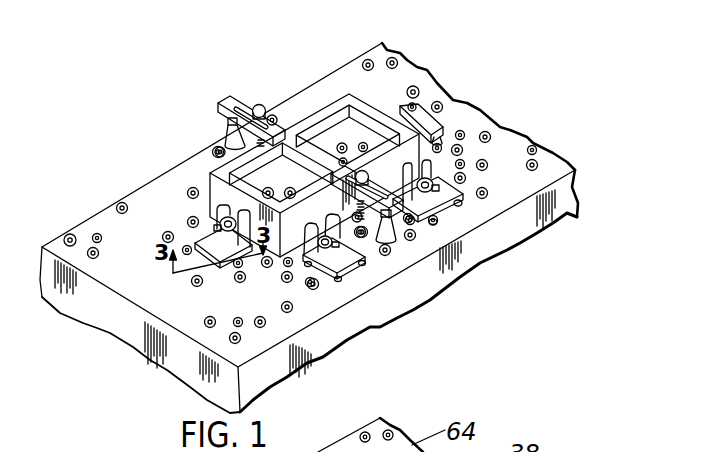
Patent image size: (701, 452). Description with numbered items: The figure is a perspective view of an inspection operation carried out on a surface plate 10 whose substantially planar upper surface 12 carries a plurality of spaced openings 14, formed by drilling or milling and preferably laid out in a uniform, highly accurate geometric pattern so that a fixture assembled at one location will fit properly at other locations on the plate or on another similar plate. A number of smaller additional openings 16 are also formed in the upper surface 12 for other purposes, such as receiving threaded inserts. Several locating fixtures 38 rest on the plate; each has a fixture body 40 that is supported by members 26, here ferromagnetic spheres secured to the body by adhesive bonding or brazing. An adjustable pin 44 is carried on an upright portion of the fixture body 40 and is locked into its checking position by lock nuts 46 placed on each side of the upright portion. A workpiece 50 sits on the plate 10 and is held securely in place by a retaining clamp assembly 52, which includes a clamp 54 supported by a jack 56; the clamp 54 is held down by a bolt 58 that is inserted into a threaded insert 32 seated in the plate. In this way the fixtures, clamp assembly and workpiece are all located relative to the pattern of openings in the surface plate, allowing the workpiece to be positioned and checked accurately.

The surface plate 10 is at (291, 228).
The upper surface 12 is at (125, 278).
The openings 14 is at (165, 232).
The additional openings 16 is at (314, 290).
The members 26 is at (348, 274).
The threaded insert 32 is at (366, 238).
The locating fixtures 38 is at (387, 248).
The fixture body 40 is at (357, 277).
The adjustable pin 44 is at (366, 268).
The lock nuts 46 is at (297, 264).
The workpiece 50 is at (303, 107).
The retaining clamp assembly 52 is at (206, 100).
The clamp 54 is at (232, 100).
The jack 56 is at (229, 128).
The bolt 58 is at (260, 106).